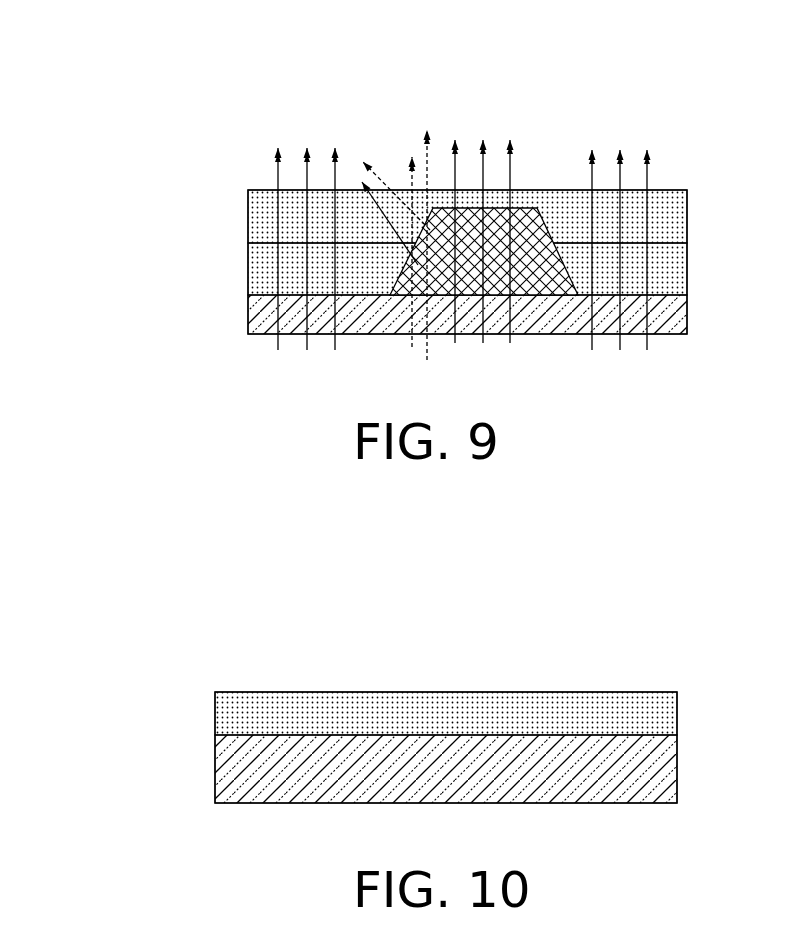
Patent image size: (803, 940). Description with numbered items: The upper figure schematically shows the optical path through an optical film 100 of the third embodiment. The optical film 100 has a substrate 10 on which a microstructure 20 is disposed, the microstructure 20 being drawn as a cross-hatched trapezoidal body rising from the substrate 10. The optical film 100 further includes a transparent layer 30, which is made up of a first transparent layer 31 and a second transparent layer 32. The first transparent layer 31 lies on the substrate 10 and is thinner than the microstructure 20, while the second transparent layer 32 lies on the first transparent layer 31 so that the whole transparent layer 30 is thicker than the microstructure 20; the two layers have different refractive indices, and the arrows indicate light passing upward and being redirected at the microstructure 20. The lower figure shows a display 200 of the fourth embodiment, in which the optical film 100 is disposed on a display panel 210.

In FIG. 9, the optical film 100 is at (371, 193).
In FIG. 10, the optical film 100 is at (240, 703).
In FIG. 9, the microstructure 20 is at (523, 240).
In FIG. 9, the transparent layer 30 is at (371, 242).
In FIG. 9, the second transparent layer 32 is at (265, 210).
In FIG. 9, the first transparent layer 31 is at (265, 260).
In FIG. 9, the substrate 10 is at (265, 318).
In FIG. 10, the display 200 is at (390, 692).
In FIG. 10, the display panel 210 is at (230, 762).